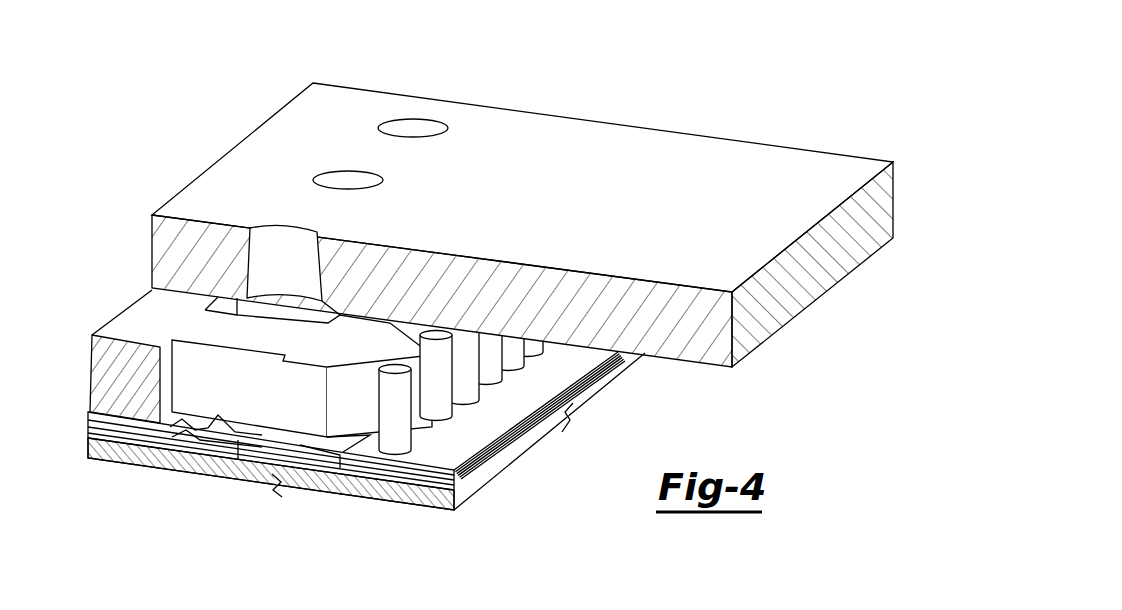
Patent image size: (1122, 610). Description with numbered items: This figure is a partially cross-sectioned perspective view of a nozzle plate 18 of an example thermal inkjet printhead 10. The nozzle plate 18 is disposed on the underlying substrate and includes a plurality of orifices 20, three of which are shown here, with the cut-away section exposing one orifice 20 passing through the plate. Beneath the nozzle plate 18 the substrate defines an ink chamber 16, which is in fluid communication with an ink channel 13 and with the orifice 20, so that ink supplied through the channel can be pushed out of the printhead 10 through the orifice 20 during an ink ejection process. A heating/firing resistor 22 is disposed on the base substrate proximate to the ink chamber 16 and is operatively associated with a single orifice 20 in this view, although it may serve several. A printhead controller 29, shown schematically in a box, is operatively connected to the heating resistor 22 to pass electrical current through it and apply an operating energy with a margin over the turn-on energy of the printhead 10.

The thermal inkjet printhead 10 is at (214, 88).
The ink channel 13 is at (540, 381).
The ink chamber 16 is at (164, 346).
The nozzle plate 18 is at (607, 140).
The orifices 20 is at (325, 177).
The heating/firing resistor 22 is at (213, 424).
The printhead controller 29 is at (238, 440).